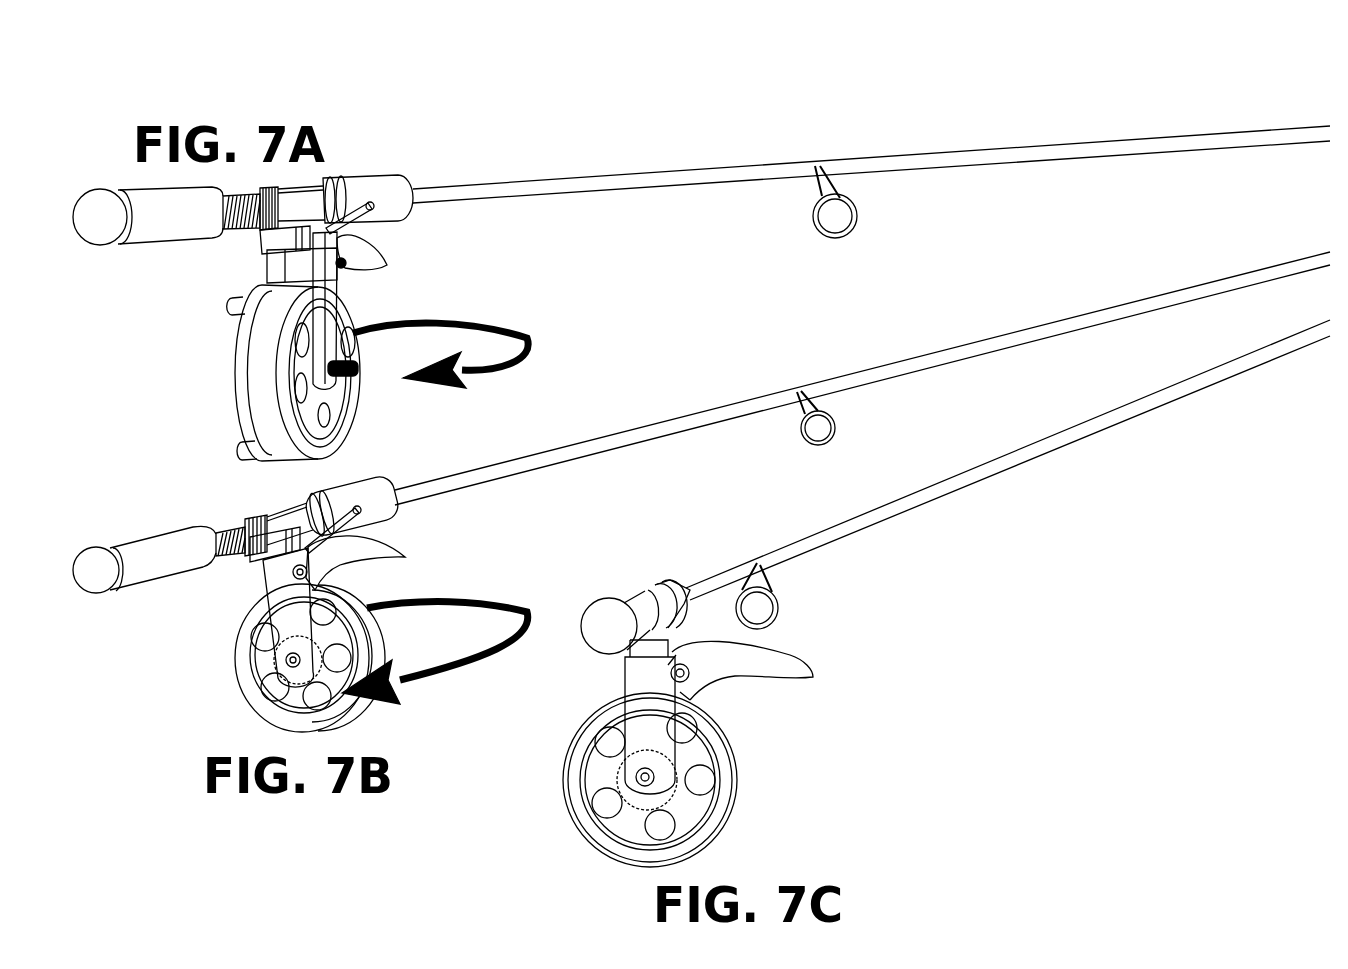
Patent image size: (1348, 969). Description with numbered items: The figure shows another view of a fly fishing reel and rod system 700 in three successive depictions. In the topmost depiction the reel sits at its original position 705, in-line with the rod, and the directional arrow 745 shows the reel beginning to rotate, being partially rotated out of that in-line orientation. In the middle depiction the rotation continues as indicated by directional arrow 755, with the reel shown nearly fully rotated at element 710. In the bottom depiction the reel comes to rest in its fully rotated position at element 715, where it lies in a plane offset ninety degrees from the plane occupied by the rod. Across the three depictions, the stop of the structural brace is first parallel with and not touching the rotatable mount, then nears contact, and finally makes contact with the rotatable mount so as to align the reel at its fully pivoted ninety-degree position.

In FIG. 7A, the fly fishing reel and rod system 700 is at (1200, 43).
In FIG. 7A, the original position 705 is at (226, 373).
In FIG. 7B, the nearly fully rotated position 710 is at (227, 673).
In FIG. 7C, the fully rotated position 715 is at (752, 768).
In FIG. 7A, the directional arrow 745 is at (477, 339).
In FIG. 7B, the directional arrow 755 is at (517, 634).